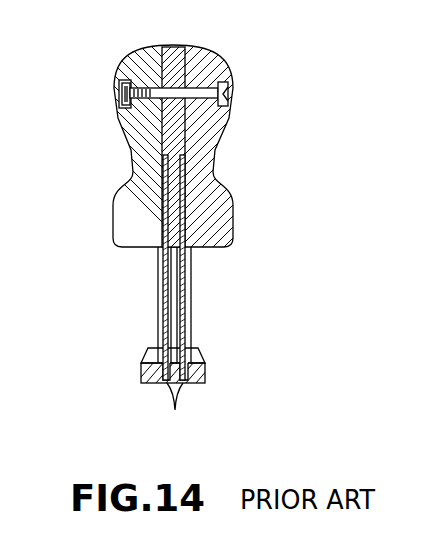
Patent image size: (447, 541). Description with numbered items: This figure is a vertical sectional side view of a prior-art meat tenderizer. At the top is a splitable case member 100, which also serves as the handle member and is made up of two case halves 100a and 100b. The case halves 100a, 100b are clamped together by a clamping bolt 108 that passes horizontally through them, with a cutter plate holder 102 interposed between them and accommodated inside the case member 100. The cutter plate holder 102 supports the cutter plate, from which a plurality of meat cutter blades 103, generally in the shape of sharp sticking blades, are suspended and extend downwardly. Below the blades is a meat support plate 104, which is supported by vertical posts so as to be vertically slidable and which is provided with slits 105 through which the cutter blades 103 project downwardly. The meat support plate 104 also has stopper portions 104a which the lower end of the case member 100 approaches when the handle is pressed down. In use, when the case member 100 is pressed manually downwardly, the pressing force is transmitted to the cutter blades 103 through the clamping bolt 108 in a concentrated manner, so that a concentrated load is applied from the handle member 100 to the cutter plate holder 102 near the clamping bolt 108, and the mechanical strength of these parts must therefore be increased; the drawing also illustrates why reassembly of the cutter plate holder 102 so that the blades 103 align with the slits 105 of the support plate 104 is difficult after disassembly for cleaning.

The splitable case member 100 is at (221, 135).
The case half 100a is at (160, 46).
The case half 100b is at (213, 60).
The cutter plate holder 102 is at (221, 135).
The meat cutter blades 103 is at (158, 291).
The meat support plate 104 is at (205, 364).
The stopper portions 104a is at (198, 348).
The slits 105 is at (178, 414).
The clamping bolt 108 is at (127, 107).